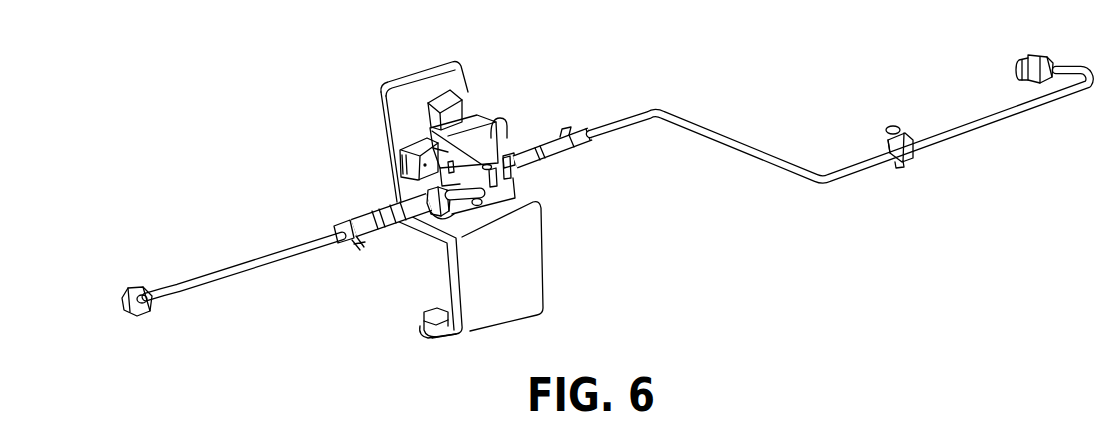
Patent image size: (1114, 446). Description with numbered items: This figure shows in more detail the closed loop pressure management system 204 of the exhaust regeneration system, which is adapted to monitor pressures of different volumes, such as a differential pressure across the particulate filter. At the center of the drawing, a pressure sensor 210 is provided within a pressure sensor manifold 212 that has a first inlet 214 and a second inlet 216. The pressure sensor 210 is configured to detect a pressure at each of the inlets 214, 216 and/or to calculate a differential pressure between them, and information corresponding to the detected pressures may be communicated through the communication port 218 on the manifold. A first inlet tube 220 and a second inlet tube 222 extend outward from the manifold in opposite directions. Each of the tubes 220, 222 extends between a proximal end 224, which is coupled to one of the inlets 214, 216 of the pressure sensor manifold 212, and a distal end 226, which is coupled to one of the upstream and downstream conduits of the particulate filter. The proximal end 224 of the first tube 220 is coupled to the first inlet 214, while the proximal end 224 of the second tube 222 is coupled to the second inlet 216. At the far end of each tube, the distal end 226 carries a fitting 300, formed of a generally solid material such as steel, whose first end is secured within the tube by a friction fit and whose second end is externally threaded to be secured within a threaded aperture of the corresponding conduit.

The closed loop pressure management system 204 is at (228, 100).
The pressure sensor 210 is at (464, 128).
The pressure sensor manifold 212 is at (594, 189).
The first inlet 214 is at (460, 193).
The second inlet 216 is at (507, 146).
The communication port 218 is at (425, 150).
The first inlet tube 220 is at (210, 283).
The second inlet tube 222 is at (853, 171).
The proximal end 224 is at (428, 203).
The distal end 226 is at (570, 143).
The fitting 300 is at (132, 287).